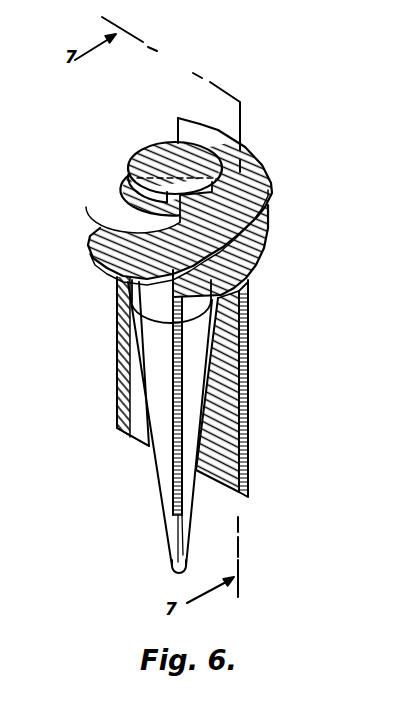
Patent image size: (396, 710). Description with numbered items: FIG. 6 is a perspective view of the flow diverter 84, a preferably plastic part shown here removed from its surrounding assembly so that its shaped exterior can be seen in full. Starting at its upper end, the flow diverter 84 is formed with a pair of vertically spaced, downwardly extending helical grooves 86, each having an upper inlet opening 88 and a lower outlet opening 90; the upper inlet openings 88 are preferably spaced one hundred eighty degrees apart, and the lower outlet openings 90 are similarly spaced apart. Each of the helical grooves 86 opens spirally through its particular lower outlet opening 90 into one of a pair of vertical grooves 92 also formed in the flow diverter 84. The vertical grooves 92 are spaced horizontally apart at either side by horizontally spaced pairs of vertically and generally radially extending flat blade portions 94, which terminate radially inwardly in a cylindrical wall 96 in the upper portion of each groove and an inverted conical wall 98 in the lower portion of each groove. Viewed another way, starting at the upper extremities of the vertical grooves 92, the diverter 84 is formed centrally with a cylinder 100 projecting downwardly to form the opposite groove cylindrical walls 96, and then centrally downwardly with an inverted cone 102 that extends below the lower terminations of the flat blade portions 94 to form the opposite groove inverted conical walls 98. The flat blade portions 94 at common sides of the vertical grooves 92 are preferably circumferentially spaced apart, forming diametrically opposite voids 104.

The flow diverter 84 is at (118, 333).
The helical grooves 86 is at (85, 246).
The upper inlet openings 88 is at (178, 127).
The lower outlet openings 90 is at (250, 297).
The vertical grooves 92 is at (123, 359).
The flat blade portions 94 is at (123, 400).
The cylindrical wall 96 is at (117, 295).
The inverted conical wall 98 is at (213, 373).
The cylinder 100 is at (140, 152).
The inverted cone 102 is at (168, 551).
The voids 104 is at (233, 393).